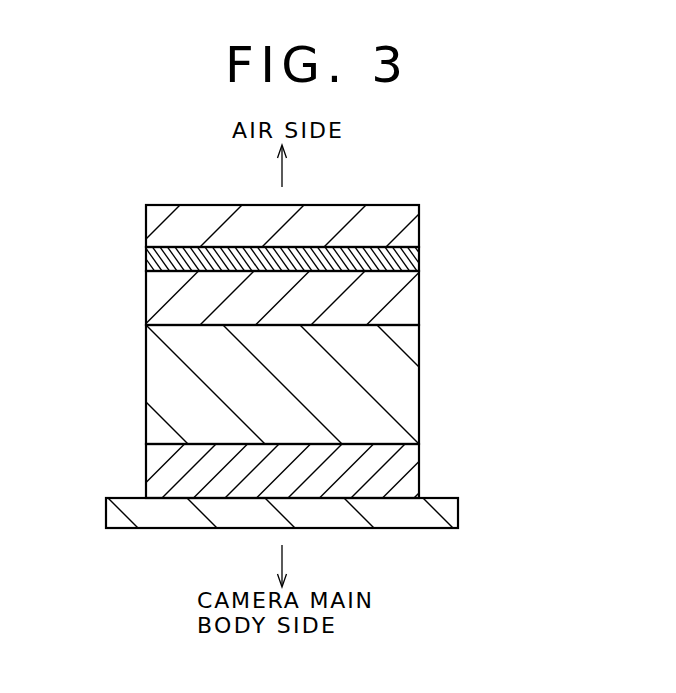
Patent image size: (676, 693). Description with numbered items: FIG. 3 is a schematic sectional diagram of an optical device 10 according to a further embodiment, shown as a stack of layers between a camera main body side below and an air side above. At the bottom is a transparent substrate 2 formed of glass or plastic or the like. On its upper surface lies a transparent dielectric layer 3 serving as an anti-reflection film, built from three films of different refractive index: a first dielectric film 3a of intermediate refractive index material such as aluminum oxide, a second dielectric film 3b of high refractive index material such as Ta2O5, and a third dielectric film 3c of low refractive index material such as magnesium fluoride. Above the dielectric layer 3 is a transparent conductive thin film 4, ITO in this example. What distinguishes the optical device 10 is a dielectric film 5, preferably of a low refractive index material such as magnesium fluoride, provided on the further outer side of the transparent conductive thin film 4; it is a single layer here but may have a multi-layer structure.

The optical device 10 is at (107, 242).
The transparent substrate 2 is at (458, 512).
The transparent dielectric layer 3 is at (307, 384).
The first dielectric film 3a is at (311, 471).
The second dielectric film 3b is at (420, 385).
The third dielectric film 3c is at (420, 297).
The transparent conductive thin film 4 is at (420, 258).
The dielectric film 5 is at (420, 224).